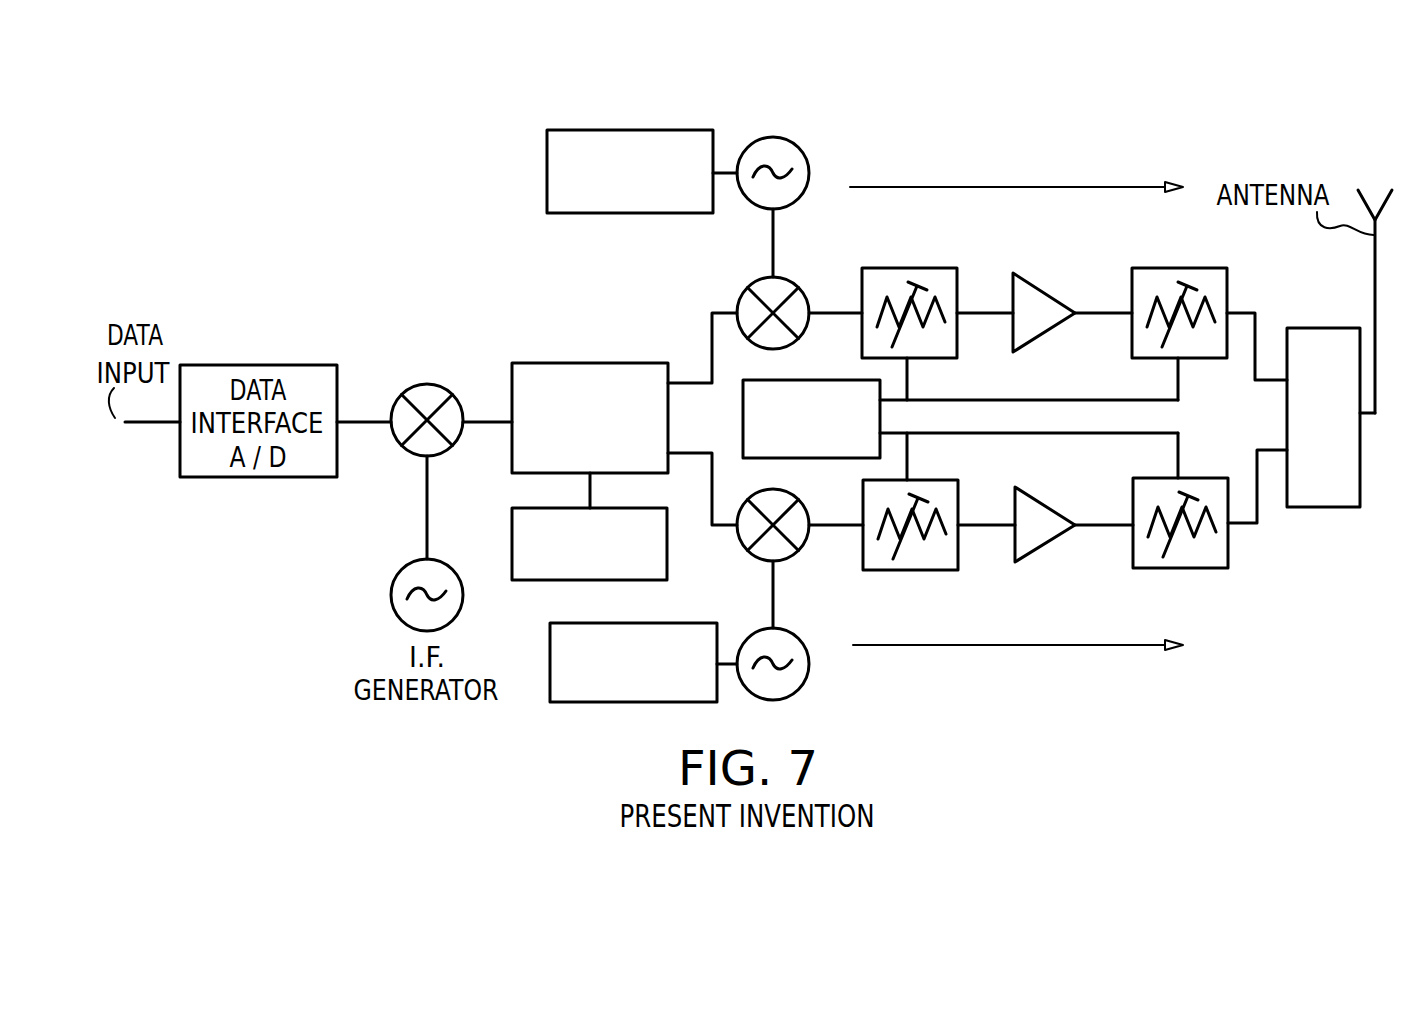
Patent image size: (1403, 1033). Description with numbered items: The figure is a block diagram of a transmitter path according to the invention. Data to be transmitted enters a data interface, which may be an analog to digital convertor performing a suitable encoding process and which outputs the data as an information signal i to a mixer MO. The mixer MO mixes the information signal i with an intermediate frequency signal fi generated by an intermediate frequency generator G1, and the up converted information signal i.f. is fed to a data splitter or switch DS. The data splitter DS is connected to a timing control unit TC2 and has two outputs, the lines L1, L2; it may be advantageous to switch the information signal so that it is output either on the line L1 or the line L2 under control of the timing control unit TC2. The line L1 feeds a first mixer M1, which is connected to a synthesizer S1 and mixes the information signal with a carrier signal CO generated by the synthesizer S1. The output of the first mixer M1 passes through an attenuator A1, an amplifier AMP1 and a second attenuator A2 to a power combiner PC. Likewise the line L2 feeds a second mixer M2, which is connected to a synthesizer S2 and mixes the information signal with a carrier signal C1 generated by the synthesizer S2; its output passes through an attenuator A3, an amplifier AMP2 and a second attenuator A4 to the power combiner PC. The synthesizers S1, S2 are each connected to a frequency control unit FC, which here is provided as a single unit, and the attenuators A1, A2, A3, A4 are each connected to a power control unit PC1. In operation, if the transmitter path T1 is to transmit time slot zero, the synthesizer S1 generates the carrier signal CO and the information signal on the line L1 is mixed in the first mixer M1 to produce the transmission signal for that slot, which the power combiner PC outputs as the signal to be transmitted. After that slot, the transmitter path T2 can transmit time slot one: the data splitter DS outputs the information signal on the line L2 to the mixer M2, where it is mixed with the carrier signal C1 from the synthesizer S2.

The information signal i is at (364, 418).
The mixer MO is at (427, 384).
The up converted information signal i.f. is at (482, 418).
The intermediate frequency signal fi is at (425, 518).
The intermediate frequency generator G1 is at (388, 588).
The data splitter DS is at (545, 363).
The timing control unit TC2 is at (532, 581).
The line L1 is at (709, 380).
The line L2 is at (712, 462).
The frequency control unit FC is at (612, 130).
The synthesizer S1 is at (786, 137).
The synthesizer S2 is at (797, 688).
The carrier signal CO is at (773, 248).
The carrier signal C1 is at (773, 586).
The first mixer M1 is at (745, 294).
The second mixer M2 is at (750, 553).
The power control unit PC1 is at (743, 403).
The attenuator A1 is at (935, 268).
The second attenuator A2 is at (1180, 268).
The attenuator A3 is at (935, 571).
The second attenuator A4 is at (1180, 568).
The amplifier AMP1 is at (1053, 296).
The amplifier AMP2 is at (1052, 540).
The transmitter path T1 is at (1016, 173).
The transmitter path T2 is at (1018, 666).
The power combiner PC is at (1326, 507).